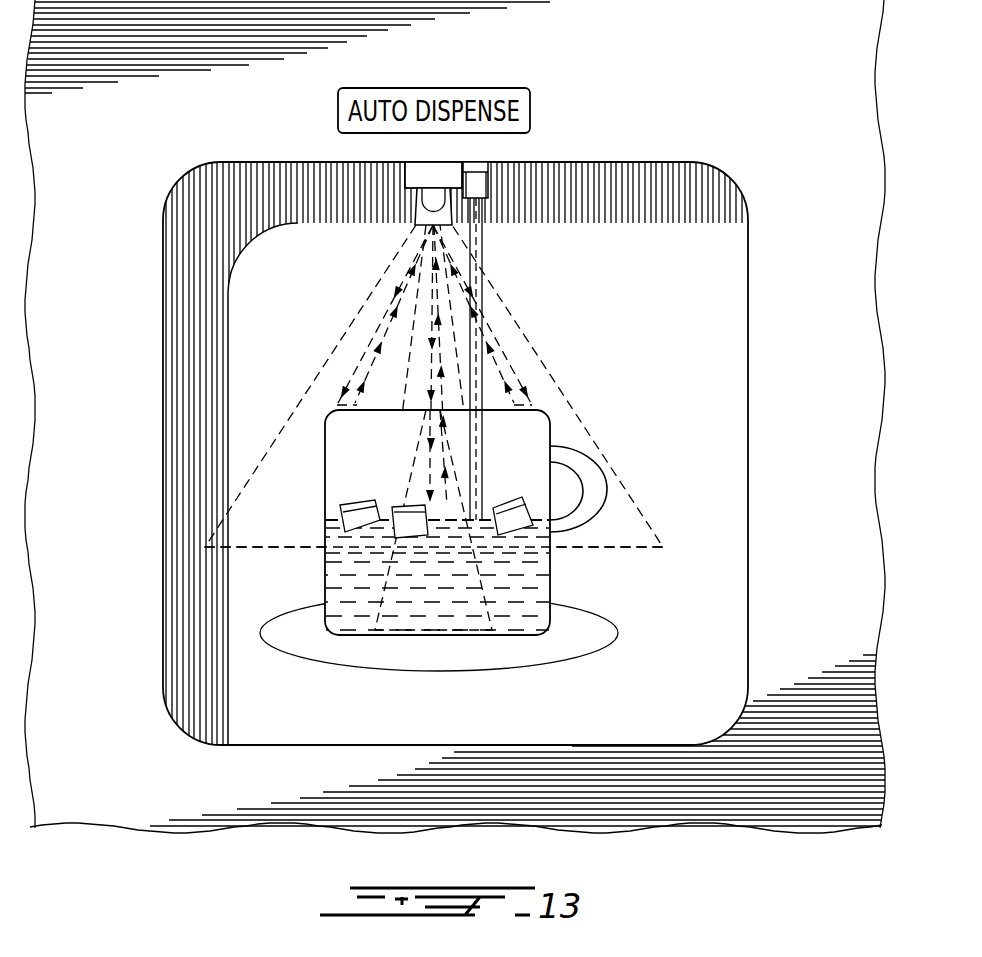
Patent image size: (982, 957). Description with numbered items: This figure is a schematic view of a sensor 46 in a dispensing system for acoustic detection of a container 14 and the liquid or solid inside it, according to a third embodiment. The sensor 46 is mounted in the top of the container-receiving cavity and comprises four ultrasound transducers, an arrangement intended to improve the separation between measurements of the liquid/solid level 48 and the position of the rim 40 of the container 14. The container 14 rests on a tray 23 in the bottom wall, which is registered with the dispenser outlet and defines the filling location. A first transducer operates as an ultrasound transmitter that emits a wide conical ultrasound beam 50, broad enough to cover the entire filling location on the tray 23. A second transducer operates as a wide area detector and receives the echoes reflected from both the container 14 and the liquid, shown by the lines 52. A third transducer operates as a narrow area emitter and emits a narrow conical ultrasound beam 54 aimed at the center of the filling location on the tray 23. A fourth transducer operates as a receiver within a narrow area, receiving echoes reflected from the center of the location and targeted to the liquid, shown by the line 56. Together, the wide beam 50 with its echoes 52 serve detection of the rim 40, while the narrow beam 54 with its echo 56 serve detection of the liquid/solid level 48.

The container 14 is at (562, 570).
The tray 23 is at (393, 657).
The rim 40 is at (542, 410).
The sensor 46 is at (405, 177).
The liquid/solid level 48 is at (342, 507).
The wide conical ultrasound beam 50 is at (297, 407).
The echo lines 52 is at (486, 292).
The narrow conical ultrasound beam 54 is at (400, 452).
The echo line 56 is at (430, 362).